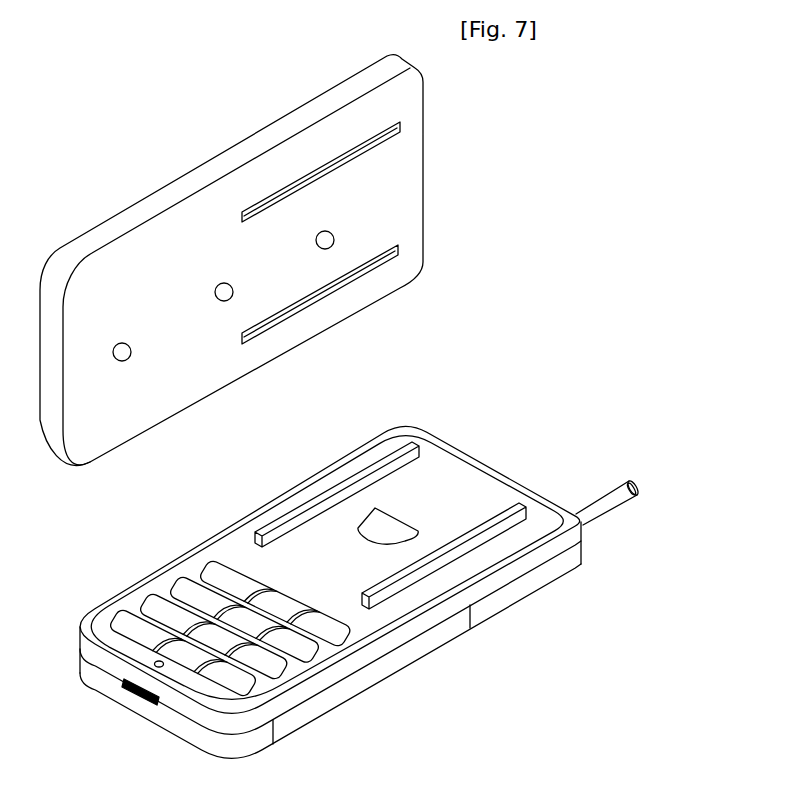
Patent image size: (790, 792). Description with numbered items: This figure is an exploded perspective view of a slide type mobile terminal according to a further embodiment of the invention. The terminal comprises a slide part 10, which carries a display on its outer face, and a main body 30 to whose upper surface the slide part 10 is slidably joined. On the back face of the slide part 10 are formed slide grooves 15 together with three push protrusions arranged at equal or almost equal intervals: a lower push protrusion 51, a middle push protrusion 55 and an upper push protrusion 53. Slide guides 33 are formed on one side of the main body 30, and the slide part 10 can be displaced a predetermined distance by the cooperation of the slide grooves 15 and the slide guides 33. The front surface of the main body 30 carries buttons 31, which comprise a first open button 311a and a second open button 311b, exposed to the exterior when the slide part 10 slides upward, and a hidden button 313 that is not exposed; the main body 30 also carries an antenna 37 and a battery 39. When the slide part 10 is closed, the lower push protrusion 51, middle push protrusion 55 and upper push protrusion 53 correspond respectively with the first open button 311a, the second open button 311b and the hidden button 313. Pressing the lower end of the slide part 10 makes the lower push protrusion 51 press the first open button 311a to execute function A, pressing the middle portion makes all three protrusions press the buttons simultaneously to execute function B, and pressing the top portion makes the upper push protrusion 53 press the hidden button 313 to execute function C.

The slide part 10 is at (235, 136).
The slide grooves 15 is at (378, 140).
The lower push protrusion 51 is at (124, 361).
The upper push protrusion 53 is at (323, 250).
The middle push protrusion 55 is at (222, 301).
The main body 30 is at (508, 605).
The buttons 31 is at (107, 576).
The slide guides 33 is at (421, 444).
The antenna 37 is at (607, 517).
The battery 39 is at (342, 706).
The first open button 311a is at (182, 657).
The second open button 311b is at (287, 583).
The hidden button 313 is at (373, 508).